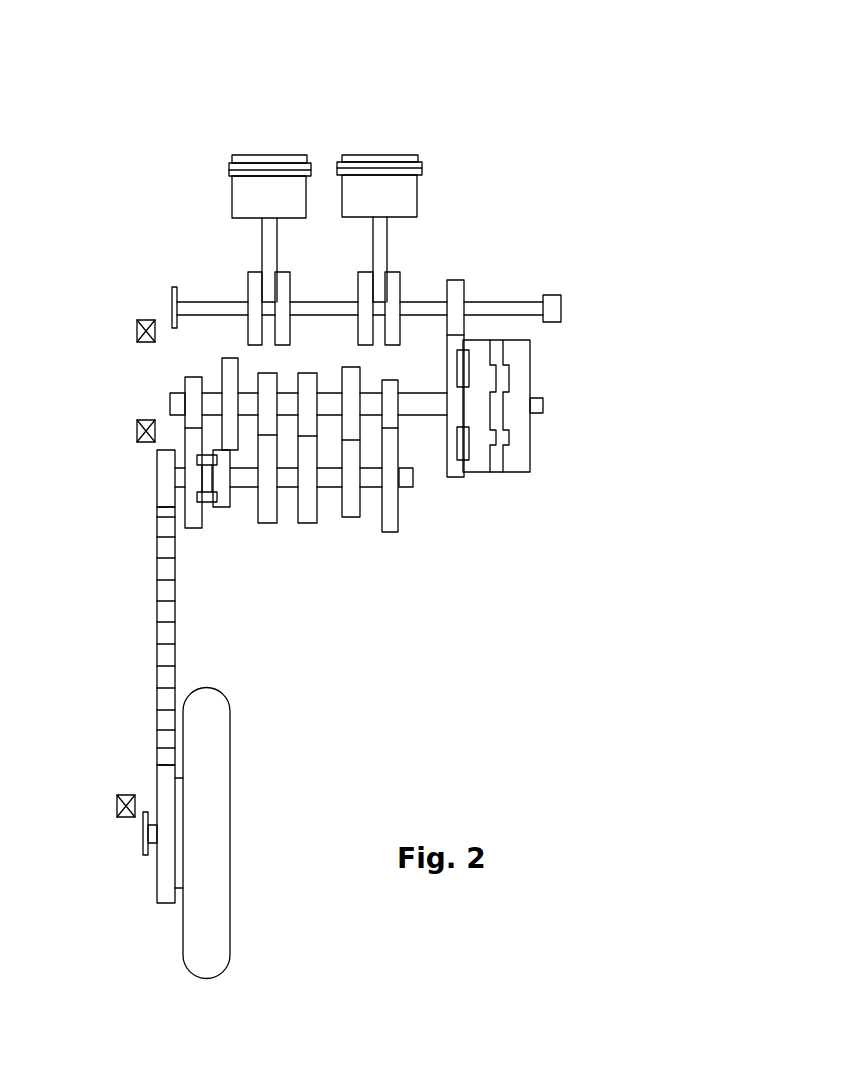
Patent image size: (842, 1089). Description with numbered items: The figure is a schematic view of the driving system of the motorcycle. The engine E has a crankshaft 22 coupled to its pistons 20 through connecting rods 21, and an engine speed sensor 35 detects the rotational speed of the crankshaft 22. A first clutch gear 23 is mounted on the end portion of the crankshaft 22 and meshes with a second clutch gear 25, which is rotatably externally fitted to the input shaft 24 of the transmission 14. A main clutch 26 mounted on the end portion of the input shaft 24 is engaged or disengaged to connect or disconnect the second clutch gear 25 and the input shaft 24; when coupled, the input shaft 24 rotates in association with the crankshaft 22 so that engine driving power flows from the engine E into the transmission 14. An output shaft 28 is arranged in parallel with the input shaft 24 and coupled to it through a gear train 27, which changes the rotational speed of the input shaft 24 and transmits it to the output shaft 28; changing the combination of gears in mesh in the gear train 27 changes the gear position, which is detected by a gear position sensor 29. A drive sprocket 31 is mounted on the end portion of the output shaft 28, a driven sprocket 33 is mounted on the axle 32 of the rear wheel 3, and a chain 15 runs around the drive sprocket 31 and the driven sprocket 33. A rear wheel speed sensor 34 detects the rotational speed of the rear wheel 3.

The engine E is at (187, 148).
The rear wheel 3 is at (203, 688).
The transmission 14 is at (254, 543).
The chain 15 is at (157, 655).
The pistons 20 is at (418, 155).
The connecting rods 21 is at (387, 248).
The crankshaft 22 is at (195, 298).
The first clutch gear 23 is at (455, 280).
The input shaft 24 is at (170, 400).
The second clutch gear 25 is at (453, 478).
The main clutch 26 is at (517, 477).
The gear train 27 is at (325, 508).
The output shaft 28 is at (405, 490).
The gear position sensor 29 is at (137, 430).
The drive sprocket 31 is at (165, 478).
The axle 32 is at (143, 840).
The driven sprocket 33 is at (162, 896).
The rear wheel speed sensor 34 is at (117, 803).
The engine speed sensor 35 is at (137, 330).